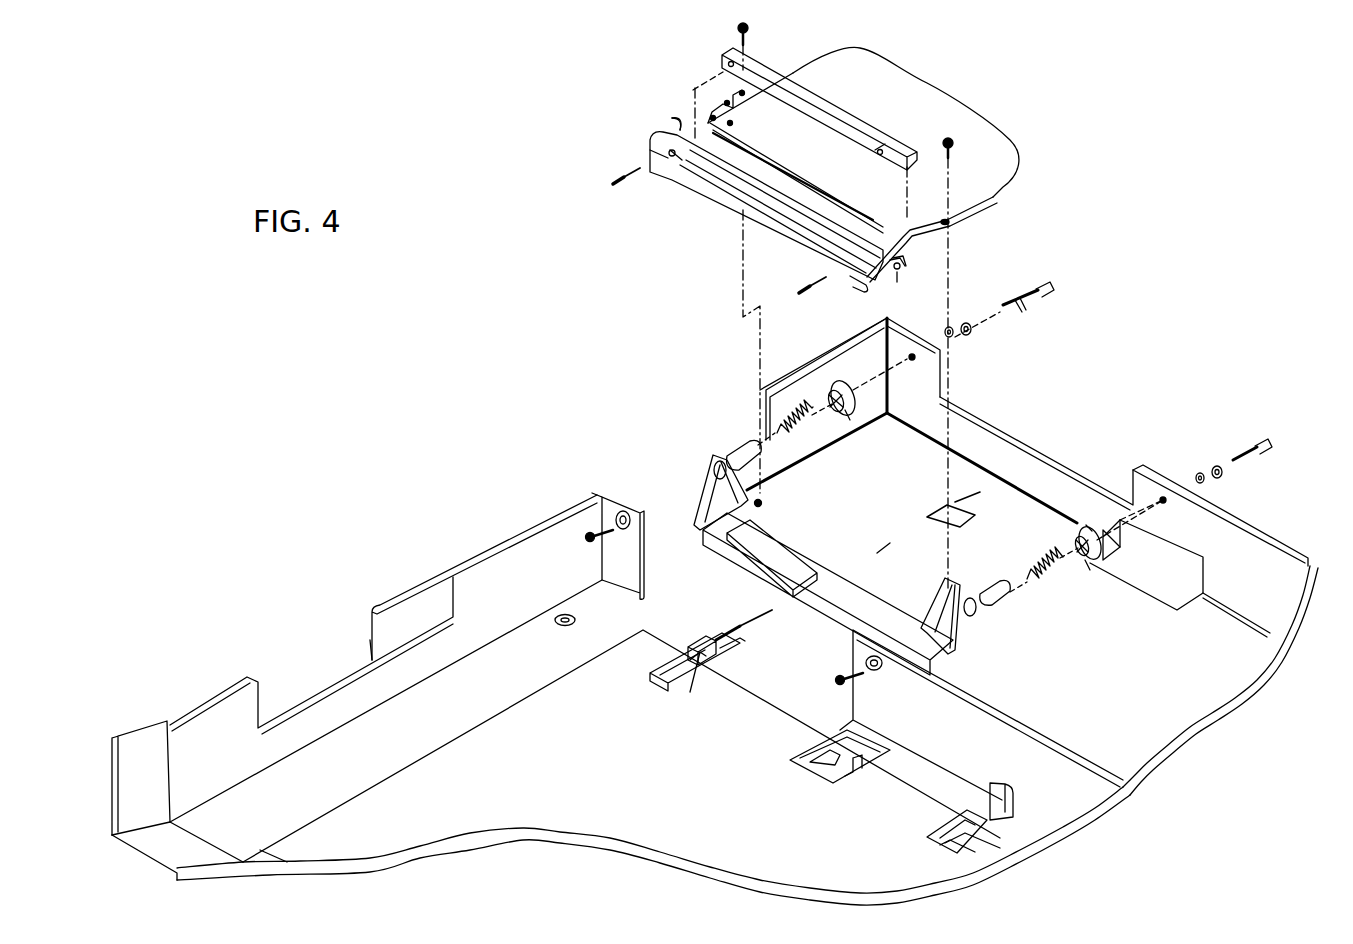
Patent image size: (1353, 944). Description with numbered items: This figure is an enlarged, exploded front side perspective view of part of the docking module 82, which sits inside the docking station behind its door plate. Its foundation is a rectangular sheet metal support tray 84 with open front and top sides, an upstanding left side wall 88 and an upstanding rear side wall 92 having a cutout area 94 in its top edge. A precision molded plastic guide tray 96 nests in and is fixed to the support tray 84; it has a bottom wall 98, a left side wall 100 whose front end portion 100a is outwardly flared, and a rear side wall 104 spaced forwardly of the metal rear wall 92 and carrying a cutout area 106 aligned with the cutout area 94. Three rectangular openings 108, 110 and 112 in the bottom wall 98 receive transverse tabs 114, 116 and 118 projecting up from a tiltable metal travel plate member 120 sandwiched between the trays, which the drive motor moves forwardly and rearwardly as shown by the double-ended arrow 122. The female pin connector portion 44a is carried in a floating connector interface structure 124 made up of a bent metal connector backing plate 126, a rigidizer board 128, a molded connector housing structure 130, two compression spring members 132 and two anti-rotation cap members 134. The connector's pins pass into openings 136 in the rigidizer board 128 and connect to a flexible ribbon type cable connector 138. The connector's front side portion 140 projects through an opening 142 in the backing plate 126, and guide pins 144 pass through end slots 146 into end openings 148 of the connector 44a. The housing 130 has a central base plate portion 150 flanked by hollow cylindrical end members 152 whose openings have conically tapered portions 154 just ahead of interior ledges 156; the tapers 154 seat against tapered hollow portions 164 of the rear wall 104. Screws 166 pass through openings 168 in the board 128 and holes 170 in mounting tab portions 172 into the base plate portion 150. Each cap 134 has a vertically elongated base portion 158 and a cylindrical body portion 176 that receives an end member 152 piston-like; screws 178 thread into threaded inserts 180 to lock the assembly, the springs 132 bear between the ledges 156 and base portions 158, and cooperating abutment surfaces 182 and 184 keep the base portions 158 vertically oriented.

The female pin connector portion 44a is at (843, 110).
The docking module 82 is at (328, 548).
The sheet metal support tray 84 is at (1243, 526).
The left side wall 88 is at (417, 603).
The rear side wall 92 is at (1280, 578).
The cutout area 94 is at (1068, 464).
The guide tray 96 is at (138, 866).
The bottom wall 98 is at (715, 735).
The left side wall 100 is at (218, 740).
The front end portion 100a is at (125, 768).
The rear side wall 104 is at (978, 746).
The cutout area 106 is at (647, 600).
The rectangular opening 108 is at (655, 673).
The rectangular opening 110 is at (803, 763).
The rectangular opening 112 is at (972, 842).
The transverse tab 114 is at (704, 670).
The transverse tab 116 is at (851, 768).
The transverse tab 118 is at (993, 830).
The travel plate member 120 is at (688, 682).
The double-ended arrow 122 is at (948, 827).
The floating connector interface structure 124 is at (622, 111).
The connector backing plate 126 is at (705, 194).
The rigidizer board 128 is at (985, 217).
The connector housing structure 130 is at (818, 518).
The compression spring member 132 is at (787, 410).
The anti-rotation cap member 134 is at (852, 382).
The openings 136 is at (853, 188).
The flexible ribbon type cable connector 138 is at (1005, 152).
The front side portion 140 is at (880, 145).
The opening 142 is at (690, 172).
The guide pin 144 is at (625, 176).
The end slot 146 is at (656, 141).
The end opening 148 is at (720, 63).
The base plate portion 150 is at (893, 570).
The end member 152 is at (741, 447).
The conically tapered portion 154 is at (714, 463).
The interior ledge 156 is at (858, 397).
The base portion 158 is at (1087, 523).
The conically tapered hollow portion 164 is at (618, 512).
The screw 166 is at (750, 28).
The opening 168 is at (718, 98).
The hole 170 is at (665, 166).
The mounting tab portion 172 is at (676, 118).
The cylindrical body portion 176 is at (830, 385).
The screw 178 is at (1022, 301).
The threaded insert 180 is at (588, 537).
The abutment surface 182 is at (690, 530).
The abutment surface 184 is at (860, 408).